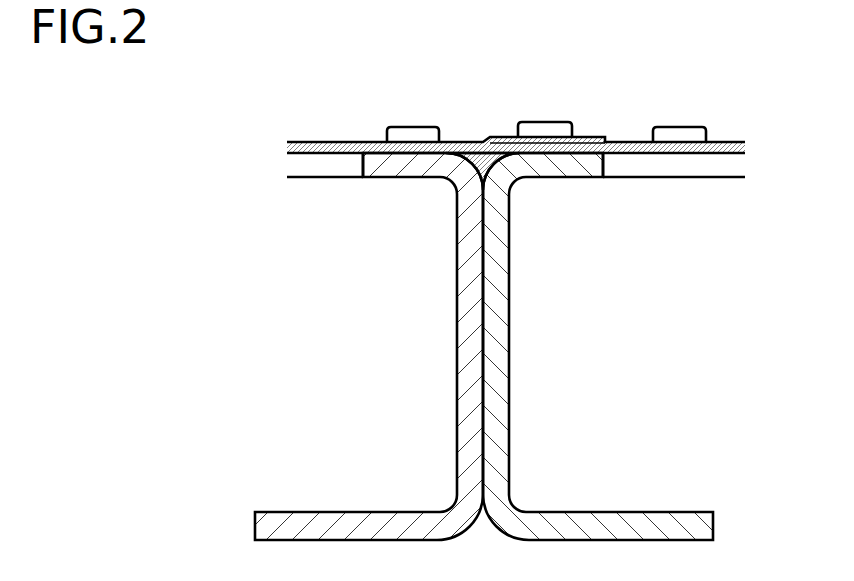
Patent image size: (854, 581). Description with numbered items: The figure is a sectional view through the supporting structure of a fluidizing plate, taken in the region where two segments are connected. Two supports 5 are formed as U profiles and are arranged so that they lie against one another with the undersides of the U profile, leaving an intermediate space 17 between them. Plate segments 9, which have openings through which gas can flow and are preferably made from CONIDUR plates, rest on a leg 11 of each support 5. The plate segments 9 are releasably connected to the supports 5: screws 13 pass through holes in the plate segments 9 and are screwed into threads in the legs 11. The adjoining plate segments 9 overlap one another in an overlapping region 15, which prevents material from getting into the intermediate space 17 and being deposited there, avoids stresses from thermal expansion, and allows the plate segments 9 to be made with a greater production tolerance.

The support 5 is at (510, 359).
The plate segment 9 is at (318, 142).
The leg 11 is at (577, 178).
The screw 13 is at (420, 127).
The overlapping region 15 is at (580, 123).
The intermediate space 17 is at (483, 160).